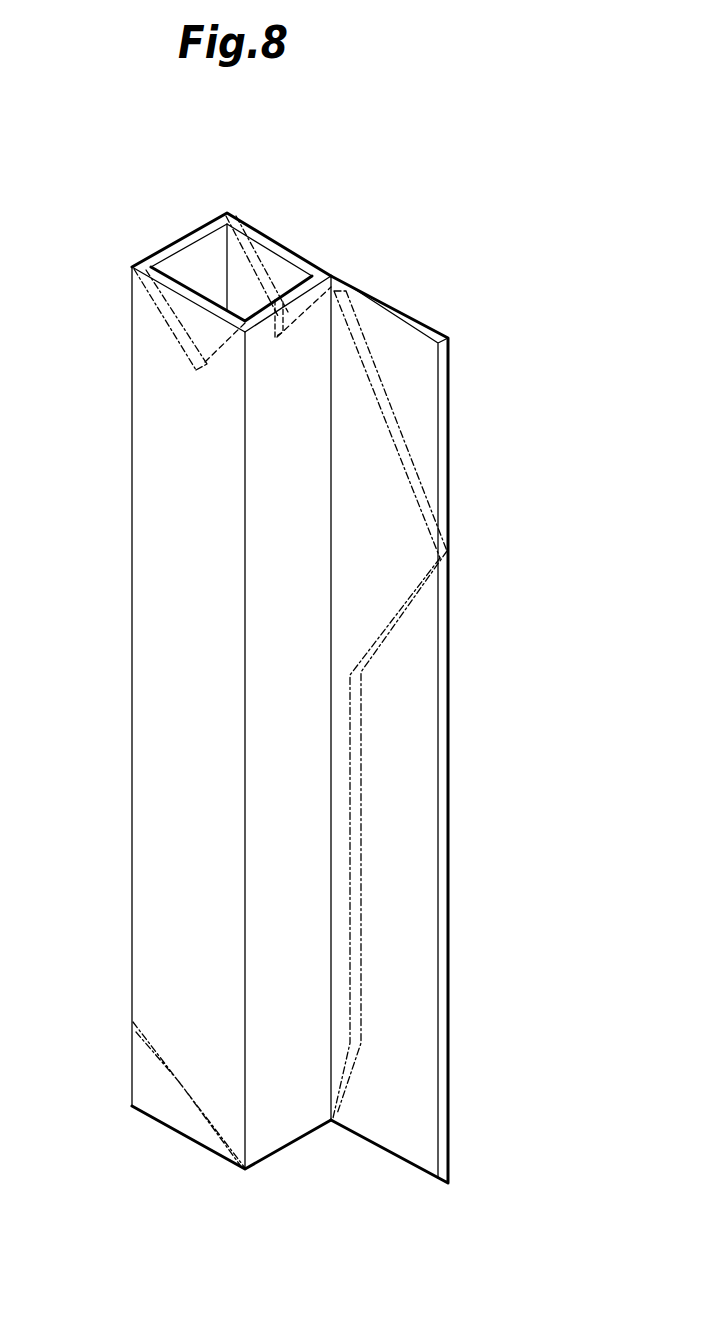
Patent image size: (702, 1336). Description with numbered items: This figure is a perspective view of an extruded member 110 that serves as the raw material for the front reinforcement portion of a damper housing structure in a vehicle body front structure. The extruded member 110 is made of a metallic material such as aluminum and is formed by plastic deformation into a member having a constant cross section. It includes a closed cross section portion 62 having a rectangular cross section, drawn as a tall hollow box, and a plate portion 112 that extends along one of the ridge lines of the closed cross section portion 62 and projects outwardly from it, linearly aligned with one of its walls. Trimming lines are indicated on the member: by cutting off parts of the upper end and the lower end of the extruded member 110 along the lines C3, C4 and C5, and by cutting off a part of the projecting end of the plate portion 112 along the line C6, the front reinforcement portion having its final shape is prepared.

The extruded member 110 is at (100, 292).
The closed cross section portion 62 is at (150, 650).
The plate portion 112 is at (415, 853).
The line C3 is at (175, 323).
The line C4 is at (308, 325).
The line C5 is at (178, 1083).
The line C6 is at (413, 465).